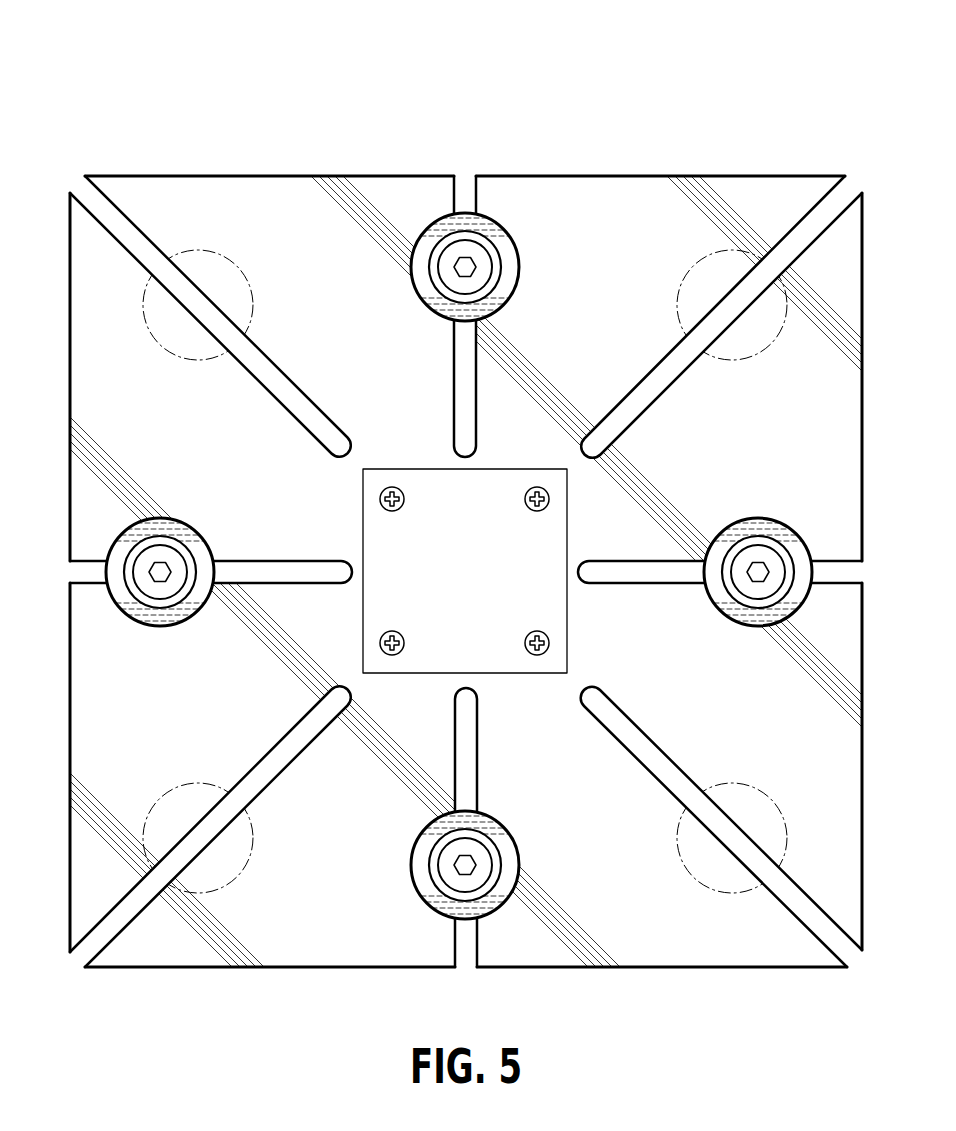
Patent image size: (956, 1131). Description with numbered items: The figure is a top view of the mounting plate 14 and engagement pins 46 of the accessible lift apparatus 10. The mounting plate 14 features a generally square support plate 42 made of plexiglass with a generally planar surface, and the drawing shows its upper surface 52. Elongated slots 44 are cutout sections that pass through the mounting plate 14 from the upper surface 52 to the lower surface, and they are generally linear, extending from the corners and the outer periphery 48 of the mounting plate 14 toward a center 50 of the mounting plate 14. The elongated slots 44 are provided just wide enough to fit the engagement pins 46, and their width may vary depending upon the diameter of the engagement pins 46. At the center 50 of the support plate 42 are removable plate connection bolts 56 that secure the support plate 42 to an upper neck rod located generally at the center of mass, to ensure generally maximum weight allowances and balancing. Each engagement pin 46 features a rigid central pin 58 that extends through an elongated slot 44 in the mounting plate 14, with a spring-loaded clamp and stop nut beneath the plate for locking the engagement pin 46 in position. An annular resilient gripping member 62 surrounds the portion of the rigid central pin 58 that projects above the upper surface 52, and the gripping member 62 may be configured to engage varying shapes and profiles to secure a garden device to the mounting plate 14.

The accessible lift apparatus 10 is at (435, 484).
The mounting plate 14 is at (435, 526).
The support plate 42 is at (331, 176).
The elongated slots 44 is at (640, 752).
The engagement pins 46 is at (405, 864).
The outer periphery 48 is at (68, 716).
The center 50 is at (448, 582).
The upper surface 52 is at (188, 185).
The plate connection bolts 56 is at (464, 571).
The rigid central pin 58 is at (445, 890).
The annular resilient gripping member 62 is at (501, 827).